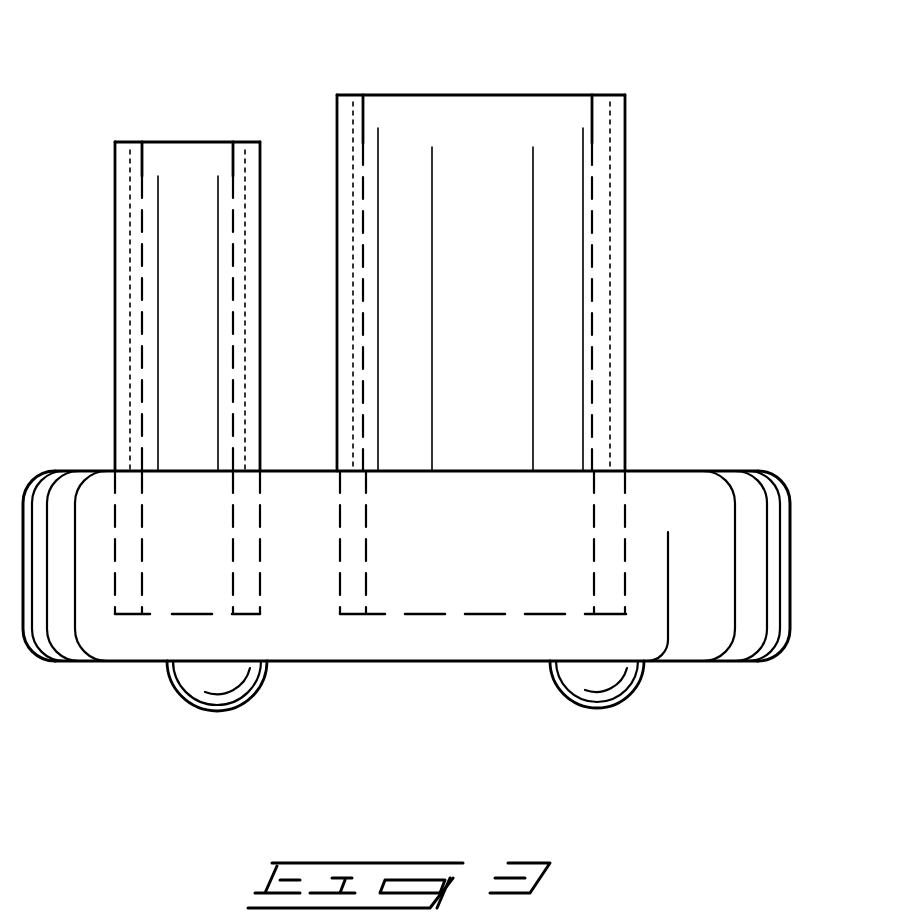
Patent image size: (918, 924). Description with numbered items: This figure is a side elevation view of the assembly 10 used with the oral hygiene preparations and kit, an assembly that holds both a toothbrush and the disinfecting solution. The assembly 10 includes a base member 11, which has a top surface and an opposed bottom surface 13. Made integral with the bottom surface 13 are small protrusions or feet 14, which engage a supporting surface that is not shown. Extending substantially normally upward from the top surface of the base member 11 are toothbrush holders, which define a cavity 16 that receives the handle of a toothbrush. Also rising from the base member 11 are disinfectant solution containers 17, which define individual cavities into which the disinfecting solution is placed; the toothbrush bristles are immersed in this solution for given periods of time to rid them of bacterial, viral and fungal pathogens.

The assembly 10 is at (682, 246).
The base member 11 is at (674, 465).
The bottom surface 13 is at (680, 662).
The feet 14 is at (200, 677).
The cavity 16 is at (186, 124).
The disinfectant solution containers 17 is at (625, 128).